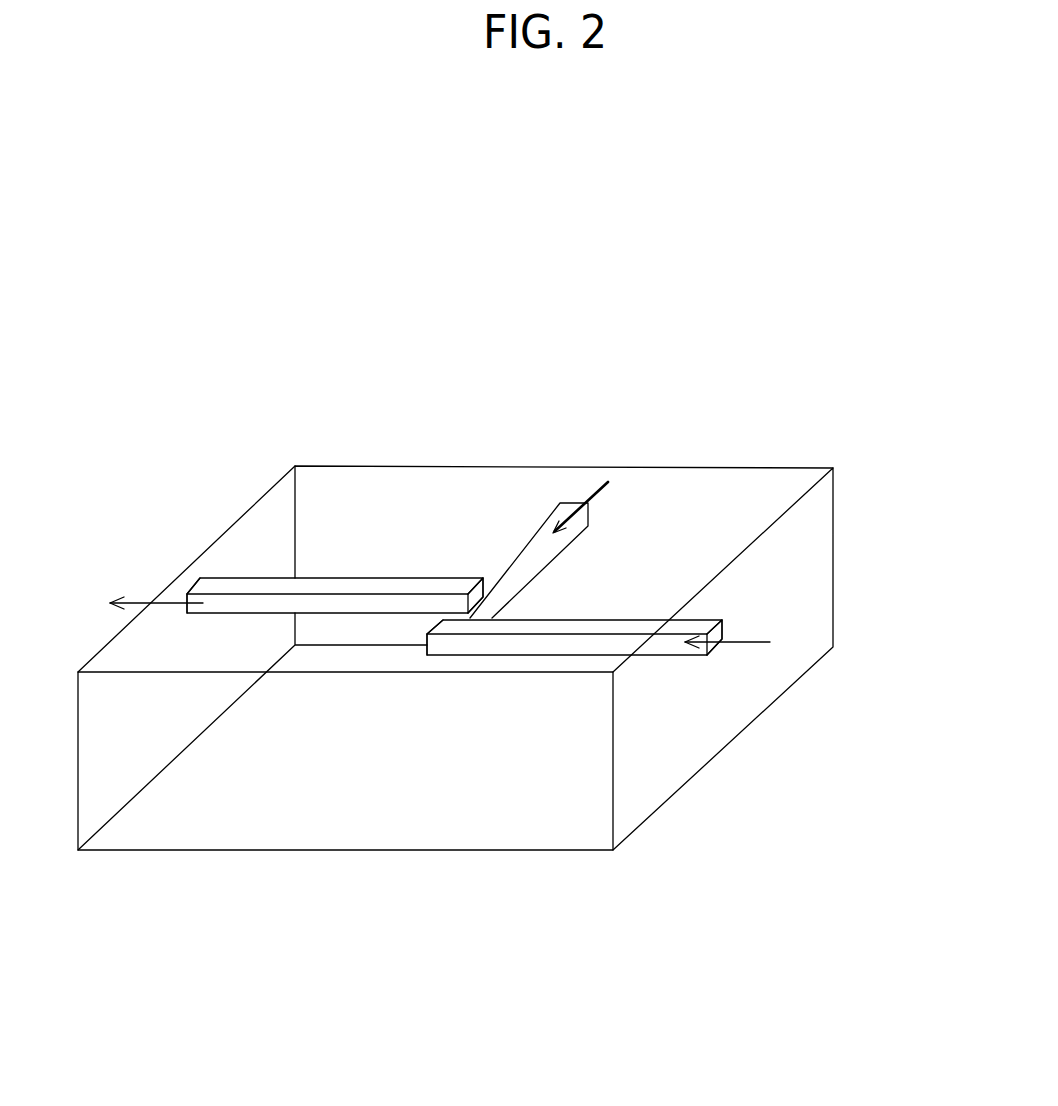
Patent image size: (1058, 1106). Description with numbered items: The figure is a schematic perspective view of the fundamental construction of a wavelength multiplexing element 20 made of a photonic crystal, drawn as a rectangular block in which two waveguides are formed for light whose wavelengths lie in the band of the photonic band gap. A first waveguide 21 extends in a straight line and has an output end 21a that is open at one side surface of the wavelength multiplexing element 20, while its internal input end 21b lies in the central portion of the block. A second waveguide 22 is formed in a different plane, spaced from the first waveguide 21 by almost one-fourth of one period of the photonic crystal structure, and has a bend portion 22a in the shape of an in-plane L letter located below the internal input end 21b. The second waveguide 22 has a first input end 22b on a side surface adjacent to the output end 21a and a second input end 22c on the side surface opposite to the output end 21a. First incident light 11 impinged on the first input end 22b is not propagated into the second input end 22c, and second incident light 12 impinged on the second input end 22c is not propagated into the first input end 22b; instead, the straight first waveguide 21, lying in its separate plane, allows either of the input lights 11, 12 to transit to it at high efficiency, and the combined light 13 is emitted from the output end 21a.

The first incident light 11 is at (593, 477).
The second incident light 12 is at (738, 645).
The output light 13 is at (150, 600).
The wavelength multiplexing element 20 is at (834, 510).
The first waveguide 21 is at (338, 578).
The output end 21a is at (204, 570).
The internal input end 21b is at (472, 570).
The second waveguide 22 is at (520, 655).
The bend portion 22a is at (443, 662).
The first input end 22b is at (563, 495).
The second input end 22c is at (733, 631).